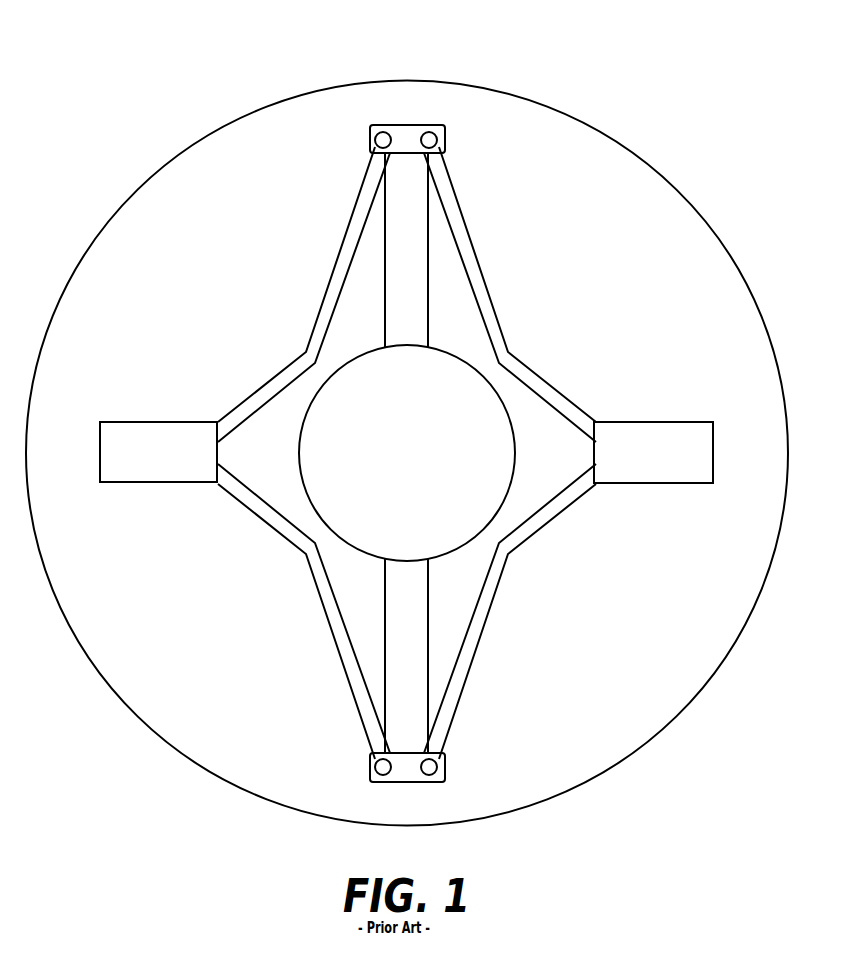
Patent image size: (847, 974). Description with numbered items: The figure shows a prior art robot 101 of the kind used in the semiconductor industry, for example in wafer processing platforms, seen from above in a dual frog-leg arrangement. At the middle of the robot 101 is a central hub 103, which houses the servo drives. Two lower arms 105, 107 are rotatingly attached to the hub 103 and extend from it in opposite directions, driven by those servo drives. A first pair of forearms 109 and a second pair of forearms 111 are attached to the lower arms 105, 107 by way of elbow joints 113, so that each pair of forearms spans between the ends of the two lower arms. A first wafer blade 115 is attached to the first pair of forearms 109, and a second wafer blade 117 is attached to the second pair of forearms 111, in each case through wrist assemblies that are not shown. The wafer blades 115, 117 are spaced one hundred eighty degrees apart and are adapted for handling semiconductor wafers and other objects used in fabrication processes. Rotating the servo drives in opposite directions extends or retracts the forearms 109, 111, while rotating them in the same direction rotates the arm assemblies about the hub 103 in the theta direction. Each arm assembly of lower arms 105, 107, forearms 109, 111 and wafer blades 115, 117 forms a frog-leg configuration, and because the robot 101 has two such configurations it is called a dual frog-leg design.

The robot 101 is at (118, 54).
The central hub 103 is at (423, 467).
The lower arm 105 is at (427, 235).
The lower arm 107 is at (427, 683).
The first pair of forearms 109 is at (316, 318).
The second pair of forearms 111 is at (500, 322).
The elbow joints 113 is at (436, 770).
The first wafer blade 115 is at (115, 421).
The second wafer blade 117 is at (700, 422).